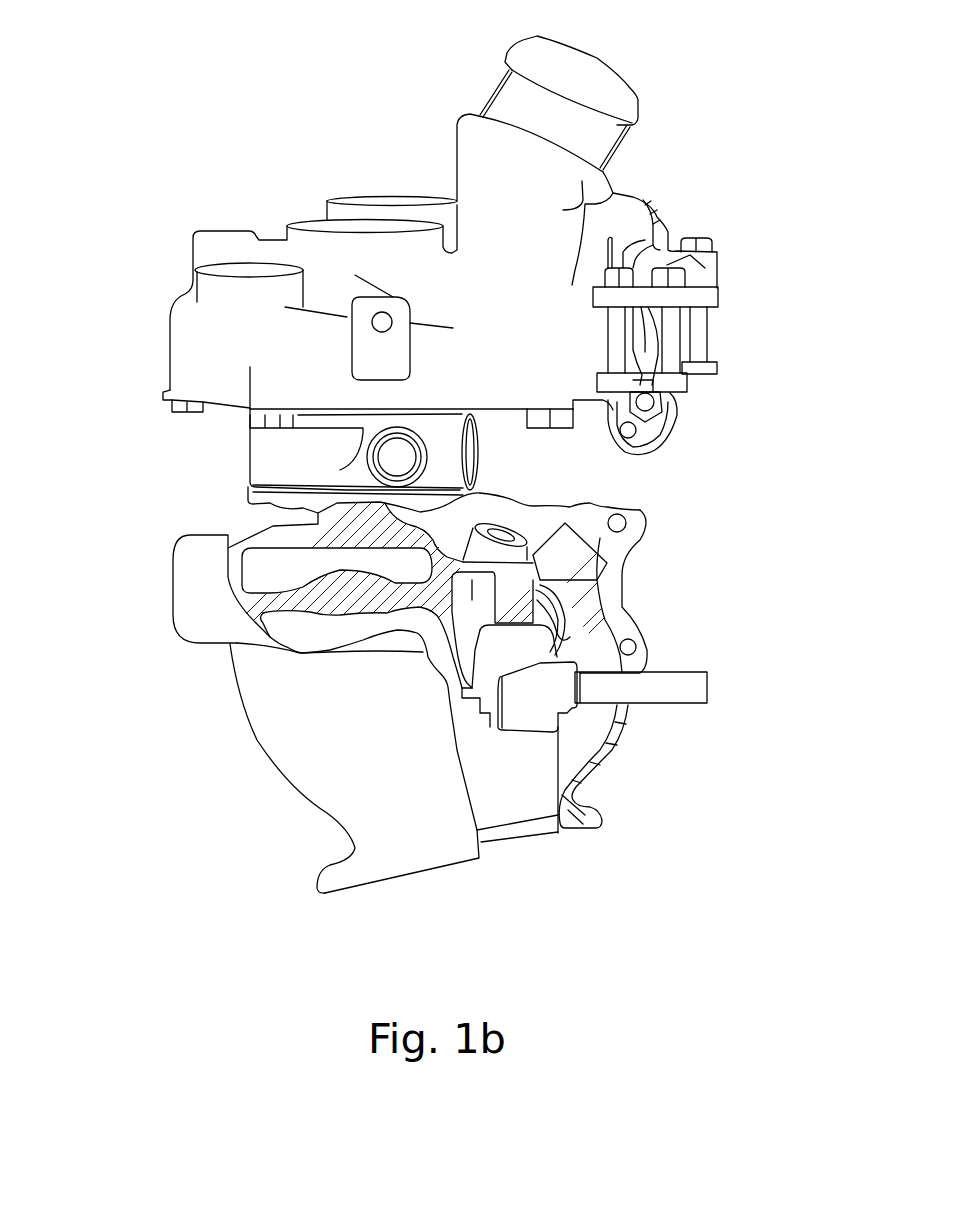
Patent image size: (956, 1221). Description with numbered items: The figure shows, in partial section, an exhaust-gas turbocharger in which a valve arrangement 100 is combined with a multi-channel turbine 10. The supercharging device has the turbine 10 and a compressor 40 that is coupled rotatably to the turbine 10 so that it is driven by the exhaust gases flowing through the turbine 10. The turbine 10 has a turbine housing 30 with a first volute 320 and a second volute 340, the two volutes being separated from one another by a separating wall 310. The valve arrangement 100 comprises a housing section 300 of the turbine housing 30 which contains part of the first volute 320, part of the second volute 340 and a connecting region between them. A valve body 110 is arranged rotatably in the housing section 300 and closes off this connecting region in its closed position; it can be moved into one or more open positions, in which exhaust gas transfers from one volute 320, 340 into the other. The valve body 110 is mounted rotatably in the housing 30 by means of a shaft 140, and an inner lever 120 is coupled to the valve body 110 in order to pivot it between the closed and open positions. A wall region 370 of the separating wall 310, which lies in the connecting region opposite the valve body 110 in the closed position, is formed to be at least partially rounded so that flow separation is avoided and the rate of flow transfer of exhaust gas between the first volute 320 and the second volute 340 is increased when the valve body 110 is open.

The multi-channel turbine 10 is at (163, 630).
The turbine housing 30 is at (277, 730).
The compressor 40 is at (143, 365).
The valve arrangement 100 is at (619, 773).
The valve body 110 is at (490, 660).
The inner lever 120 is at (527, 732).
The shaft 140 is at (682, 687).
The housing section 300 is at (607, 560).
The separating wall 310 is at (548, 597).
The first volute 320 is at (497, 522).
The second volute 340 is at (590, 540).
The wall region 370 is at (547, 621).